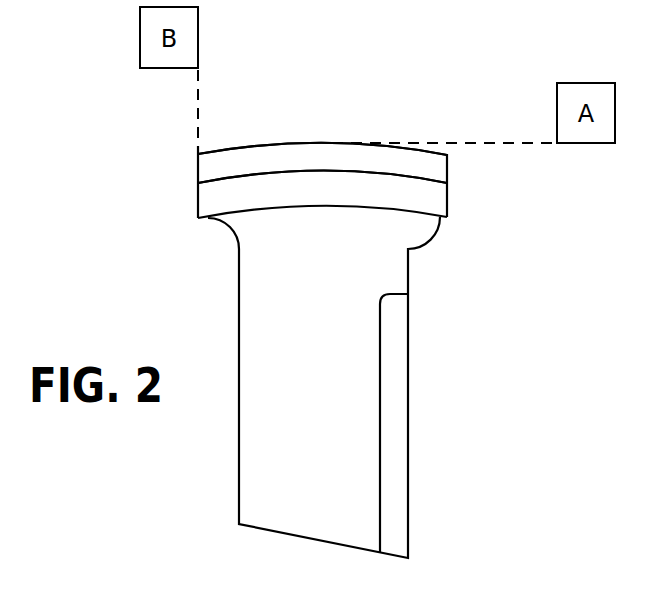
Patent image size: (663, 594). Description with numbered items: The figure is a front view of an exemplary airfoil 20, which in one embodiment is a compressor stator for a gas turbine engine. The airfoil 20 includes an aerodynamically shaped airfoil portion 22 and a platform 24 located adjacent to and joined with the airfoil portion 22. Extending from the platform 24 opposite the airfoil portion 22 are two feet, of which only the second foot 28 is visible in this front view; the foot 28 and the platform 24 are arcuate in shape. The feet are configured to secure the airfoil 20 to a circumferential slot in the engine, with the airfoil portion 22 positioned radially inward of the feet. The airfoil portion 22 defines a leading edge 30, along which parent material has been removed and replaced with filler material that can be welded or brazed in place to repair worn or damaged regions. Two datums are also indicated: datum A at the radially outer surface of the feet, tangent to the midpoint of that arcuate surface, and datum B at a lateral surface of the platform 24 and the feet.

The airfoil 20 is at (146, 256).
The airfoil portion 22 is at (335, 372).
The platform 24 is at (437, 197).
The second foot 28 is at (438, 167).
The leading edge 30 is at (393, 268).